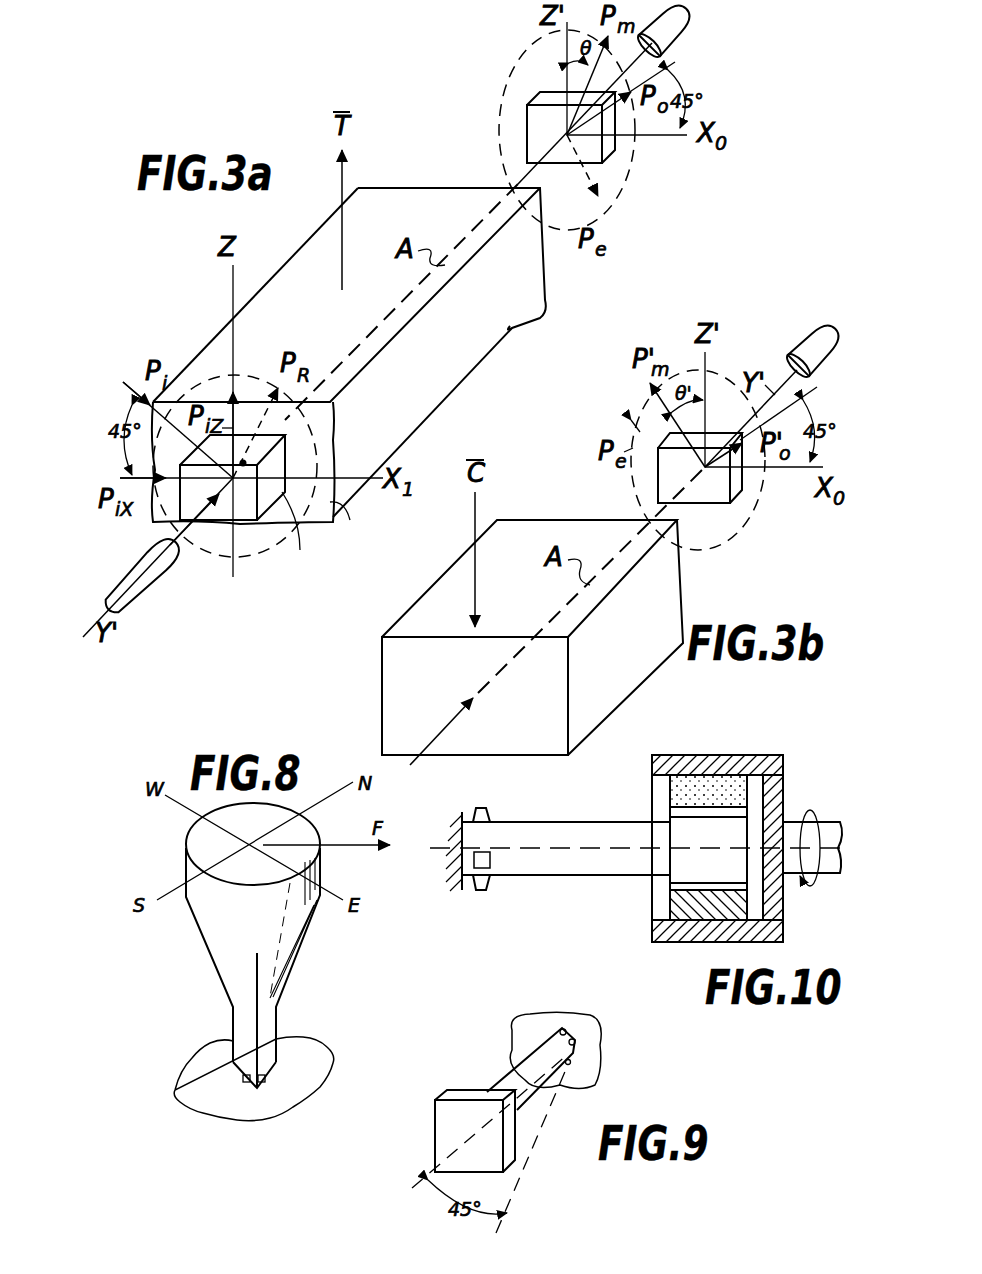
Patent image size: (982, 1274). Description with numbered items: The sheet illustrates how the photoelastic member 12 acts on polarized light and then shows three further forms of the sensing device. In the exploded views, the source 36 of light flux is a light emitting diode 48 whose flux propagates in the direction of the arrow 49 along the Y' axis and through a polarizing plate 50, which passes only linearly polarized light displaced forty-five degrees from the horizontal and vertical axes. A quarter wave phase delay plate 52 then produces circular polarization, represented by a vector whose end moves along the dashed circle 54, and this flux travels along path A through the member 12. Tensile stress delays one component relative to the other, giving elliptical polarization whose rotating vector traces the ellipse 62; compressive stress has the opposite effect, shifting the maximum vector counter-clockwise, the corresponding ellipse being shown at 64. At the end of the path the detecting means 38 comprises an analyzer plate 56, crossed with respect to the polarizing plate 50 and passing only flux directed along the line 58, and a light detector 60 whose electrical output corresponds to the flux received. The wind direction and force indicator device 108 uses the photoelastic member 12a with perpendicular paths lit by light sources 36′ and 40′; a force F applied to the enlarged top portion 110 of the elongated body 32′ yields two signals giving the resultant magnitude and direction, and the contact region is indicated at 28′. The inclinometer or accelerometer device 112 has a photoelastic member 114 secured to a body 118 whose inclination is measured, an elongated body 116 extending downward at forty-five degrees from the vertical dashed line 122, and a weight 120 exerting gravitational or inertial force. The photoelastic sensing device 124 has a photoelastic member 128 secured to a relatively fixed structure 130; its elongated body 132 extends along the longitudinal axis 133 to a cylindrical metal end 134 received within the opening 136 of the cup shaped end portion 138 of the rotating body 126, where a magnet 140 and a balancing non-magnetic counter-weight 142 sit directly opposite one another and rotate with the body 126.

In FIG. 3A, the photoelastic member 12 is at (529, 377).
In FIG. 3B, the photoelastic member 12 is at (623, 678).
In FIG. 3A, the source of light flux 36 is at (150, 590).
In FIG. 3A, the detecting means 38 is at (612, 150).
In FIG. 3B, the detecting means 38 is at (713, 493).
In FIG. 3A, the light emitting diode 48 is at (138, 552).
In FIG. 3A, the arrow 49 is at (175, 542).
In FIG. 3A, the polarizing plate 50 is at (266, 527).
In FIG. 3A, the quarter wave phase delay plate 52 is at (301, 541).
In FIG. 3A, the dashed circle 54 is at (346, 530).
In FIG. 3A, the analyzer plate 56 is at (533, 123).
In FIG. 3B, the analyzer plate 56 is at (660, 477).
In FIG. 3A, the line 58 is at (678, 58).
In FIG. 3B, the line 58 is at (812, 384).
In FIG. 3A, the light detector 60 is at (690, 25).
In FIG. 3B, the light detector 60 is at (802, 342).
In FIG. 3A, the ellipse 62 is at (535, 70).
In FIG. 3B, the reference sphere 64 is at (765, 490).
In FIG. 8, the wind direction and force indicator device 108 is at (162, 997).
In FIG. 8, the enlarged top portion 110 is at (190, 843).
In FIG. 8, the photoelastic member 12a is at (275, 1070).
In FIG. 8, the contact area 28′ is at (188, 1087).
In FIG. 8, the elongated body 32′ is at (268, 1028).
In FIG. 8, the light source 36′ is at (267, 1080).
In FIG. 8, the light source 40′ is at (242, 1078).
In FIG. 9, the inclinometer or accelerometer device 112 is at (507, 1015).
In FIG. 9, the photoelastic member 114 is at (573, 1032).
In FIG. 9, the elongated body 116 is at (527, 1063).
In FIG. 9, the body 118 is at (535, 1018).
In FIG. 9, the weight 120 is at (435, 1130).
In FIG. 9, the dashed line 122 is at (537, 1150).
In FIG. 10, the photoelastic sensing device 124 is at (565, 807).
In FIG. 10, the rotating body 126 is at (830, 828).
In FIG. 10, the photoelastic member 128 is at (468, 822).
In FIG. 10, the relatively fixed structure 130 is at (462, 883).
In FIG. 10, the elongated body 132 is at (605, 863).
In FIG. 10, the longitudinal axis 133 is at (542, 850).
In FIG. 10, the cylindrical metal end 134 is at (688, 870).
In FIG. 10, the opening 136 is at (660, 807).
In FIG. 10, the cup shaped end portion 138 is at (728, 758).
In FIG. 10, the magnet 140 is at (742, 782).
In FIG. 10, the balancing non-magnetic counter-weight 142 is at (740, 912).